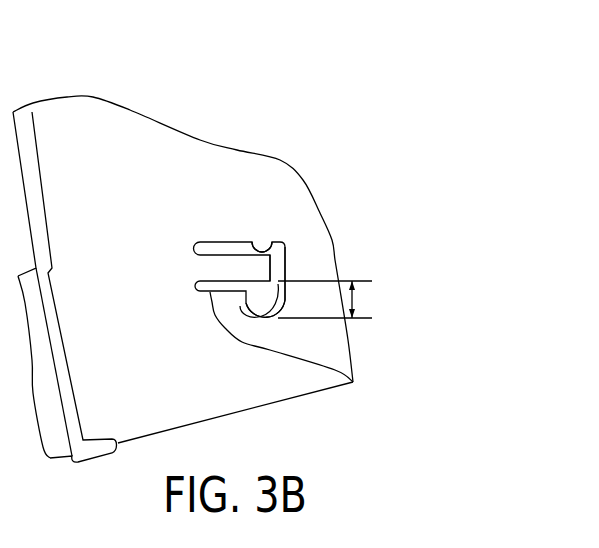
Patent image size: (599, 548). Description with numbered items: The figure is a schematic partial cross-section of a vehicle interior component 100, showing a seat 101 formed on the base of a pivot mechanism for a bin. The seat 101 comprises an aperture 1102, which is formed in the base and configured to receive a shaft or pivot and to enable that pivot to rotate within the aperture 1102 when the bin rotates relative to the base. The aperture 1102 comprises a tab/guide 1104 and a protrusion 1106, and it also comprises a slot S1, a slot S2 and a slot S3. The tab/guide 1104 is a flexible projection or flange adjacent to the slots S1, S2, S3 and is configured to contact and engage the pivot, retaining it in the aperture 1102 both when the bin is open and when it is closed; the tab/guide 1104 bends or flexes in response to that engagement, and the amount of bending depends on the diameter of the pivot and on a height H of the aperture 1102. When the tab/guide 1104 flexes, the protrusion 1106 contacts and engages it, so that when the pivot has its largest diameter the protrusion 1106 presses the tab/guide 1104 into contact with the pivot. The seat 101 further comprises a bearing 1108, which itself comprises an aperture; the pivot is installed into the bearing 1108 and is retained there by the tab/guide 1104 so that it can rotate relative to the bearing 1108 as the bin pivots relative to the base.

The mounting assembly 100 is at (317, 137).
The seat 101 is at (185, 200).
The aperture 1102 is at (196, 240).
The tab/guide 1104 is at (278, 270).
The protrusion 1106 is at (262, 242).
The bearing 1108 is at (262, 304).
The slot S1 is at (265, 262).
The slot S2 is at (212, 250).
The slot S3 is at (355, 374).
The height of aperture H is at (358, 297).